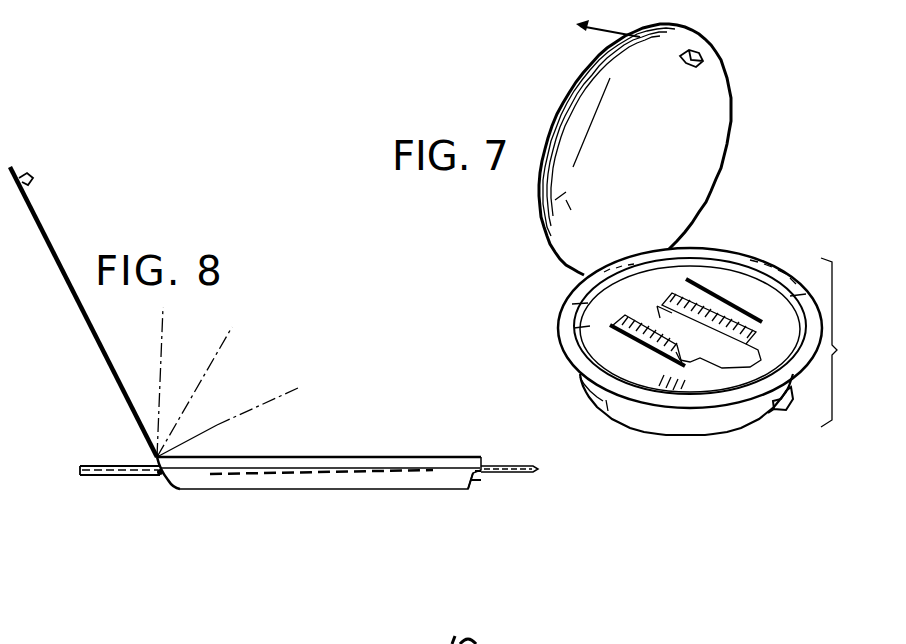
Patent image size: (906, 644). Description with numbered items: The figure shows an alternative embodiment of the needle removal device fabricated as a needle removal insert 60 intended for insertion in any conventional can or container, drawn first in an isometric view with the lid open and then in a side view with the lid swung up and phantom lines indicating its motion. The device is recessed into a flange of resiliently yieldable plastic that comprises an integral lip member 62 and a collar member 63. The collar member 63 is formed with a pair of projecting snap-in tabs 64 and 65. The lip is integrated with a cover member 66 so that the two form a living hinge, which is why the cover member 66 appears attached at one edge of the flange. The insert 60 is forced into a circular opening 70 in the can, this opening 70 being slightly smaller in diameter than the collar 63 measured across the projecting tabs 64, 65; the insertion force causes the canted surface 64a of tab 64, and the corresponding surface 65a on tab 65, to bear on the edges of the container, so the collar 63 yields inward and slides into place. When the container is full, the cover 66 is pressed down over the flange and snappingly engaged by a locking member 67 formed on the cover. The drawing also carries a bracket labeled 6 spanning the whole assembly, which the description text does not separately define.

In FIG. 7, the container assembly 6 is at (838, 342).
In FIG. 7, the needle removal insert 60 is at (558, 330).
In FIG. 7, the lip member 62 is at (572, 342).
In FIG. 7, the collar member 63 is at (638, 418).
In FIG. 7, the snap-in tab 64 is at (788, 416).
In FIG. 8, the snap-in tab 64 is at (470, 487).
In FIG. 8, the canted surface 64a is at (479, 477).
In FIG. 8, the snap-in tab 65 is at (170, 485).
In FIG. 8, the hinge pin 65a is at (160, 477).
In FIG. 7, the cover member 66 is at (568, 207).
In FIG. 7, the locking member 67 is at (700, 63).
In FIG. 8, the circular opening 70 is at (160, 473).